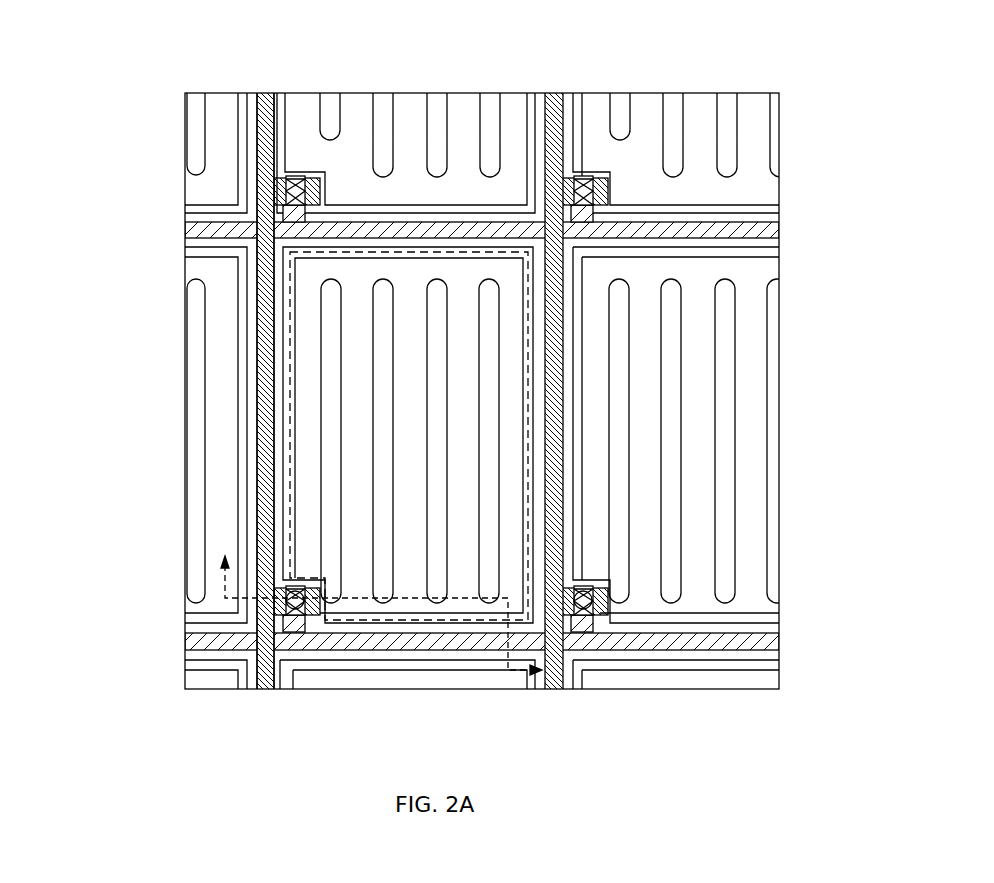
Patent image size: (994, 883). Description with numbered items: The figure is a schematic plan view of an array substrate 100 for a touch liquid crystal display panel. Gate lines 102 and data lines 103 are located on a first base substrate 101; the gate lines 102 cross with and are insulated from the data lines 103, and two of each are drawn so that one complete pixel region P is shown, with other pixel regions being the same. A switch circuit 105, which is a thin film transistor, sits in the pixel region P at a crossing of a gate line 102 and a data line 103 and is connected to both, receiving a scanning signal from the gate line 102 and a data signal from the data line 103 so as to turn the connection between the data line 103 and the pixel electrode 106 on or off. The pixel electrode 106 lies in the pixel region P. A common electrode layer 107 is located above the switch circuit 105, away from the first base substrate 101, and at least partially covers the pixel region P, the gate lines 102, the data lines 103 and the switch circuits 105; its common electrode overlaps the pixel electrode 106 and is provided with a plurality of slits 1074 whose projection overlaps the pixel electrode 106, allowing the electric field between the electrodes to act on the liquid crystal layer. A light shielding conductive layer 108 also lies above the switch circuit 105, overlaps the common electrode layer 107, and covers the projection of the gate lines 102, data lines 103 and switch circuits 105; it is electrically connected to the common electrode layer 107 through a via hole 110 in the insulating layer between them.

The array substrate 100 is at (651, 21).
The first base substrate 101 is at (187, 153).
The gate line 102 is at (257, 230).
The data line 103 is at (257, 247).
The light shielding conductive layer 108 is at (252, 300).
The pixel electrode 106 is at (297, 322).
The common electrode layer 107 is at (290, 372).
The pixel region P is at (283, 408).
The slit 1074 is at (330, 417).
The switch circuit 105 is at (278, 590).
The via hole 110 is at (295, 603).